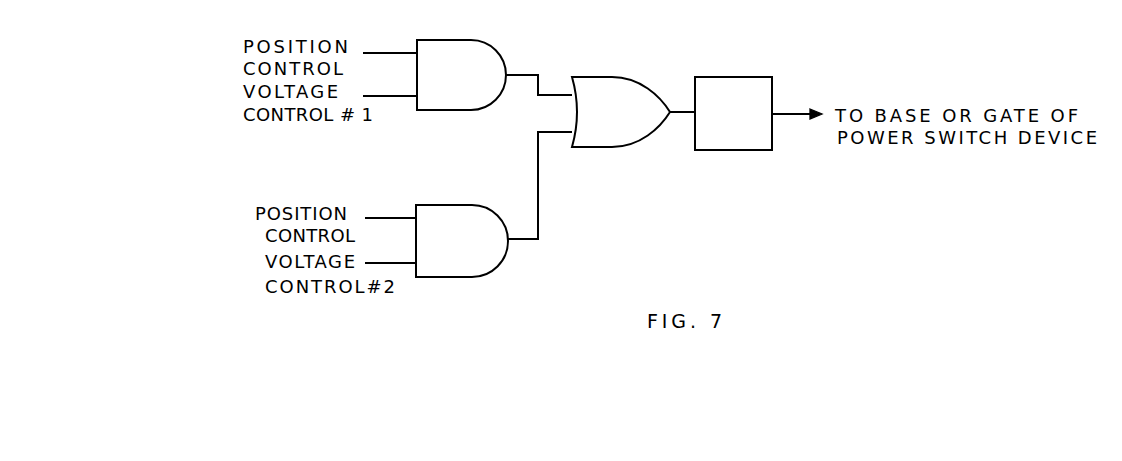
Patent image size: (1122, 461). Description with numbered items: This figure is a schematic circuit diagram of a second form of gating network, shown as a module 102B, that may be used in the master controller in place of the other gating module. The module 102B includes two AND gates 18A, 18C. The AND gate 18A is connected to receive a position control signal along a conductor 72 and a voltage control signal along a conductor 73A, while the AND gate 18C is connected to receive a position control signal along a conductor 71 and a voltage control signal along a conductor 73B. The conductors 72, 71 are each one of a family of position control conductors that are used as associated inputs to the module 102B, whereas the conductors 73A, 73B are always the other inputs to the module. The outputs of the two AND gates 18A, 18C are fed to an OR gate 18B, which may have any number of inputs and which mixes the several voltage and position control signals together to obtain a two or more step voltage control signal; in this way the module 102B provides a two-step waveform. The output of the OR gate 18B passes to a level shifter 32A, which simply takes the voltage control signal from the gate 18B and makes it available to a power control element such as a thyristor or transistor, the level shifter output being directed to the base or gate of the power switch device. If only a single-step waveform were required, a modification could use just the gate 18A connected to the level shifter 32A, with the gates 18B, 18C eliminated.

The conductor 72 is at (390, 33).
The conductor 73A is at (392, 97).
The AND gate 18A is at (494, 61).
The conductor 71 is at (390, 193).
The conductor 73B is at (395, 264).
The AND gate 18C is at (494, 212).
The OR gate 18B is at (633, 92).
The level shifter 32A is at (769, 90).
The module 102B is at (649, 200).